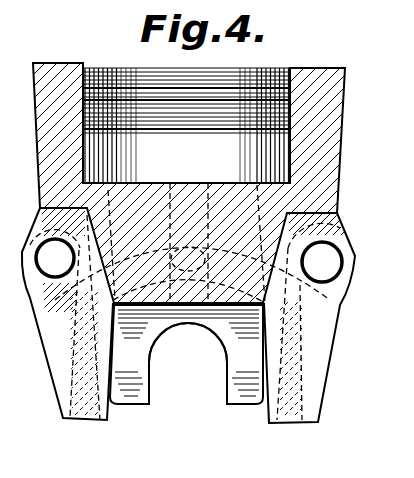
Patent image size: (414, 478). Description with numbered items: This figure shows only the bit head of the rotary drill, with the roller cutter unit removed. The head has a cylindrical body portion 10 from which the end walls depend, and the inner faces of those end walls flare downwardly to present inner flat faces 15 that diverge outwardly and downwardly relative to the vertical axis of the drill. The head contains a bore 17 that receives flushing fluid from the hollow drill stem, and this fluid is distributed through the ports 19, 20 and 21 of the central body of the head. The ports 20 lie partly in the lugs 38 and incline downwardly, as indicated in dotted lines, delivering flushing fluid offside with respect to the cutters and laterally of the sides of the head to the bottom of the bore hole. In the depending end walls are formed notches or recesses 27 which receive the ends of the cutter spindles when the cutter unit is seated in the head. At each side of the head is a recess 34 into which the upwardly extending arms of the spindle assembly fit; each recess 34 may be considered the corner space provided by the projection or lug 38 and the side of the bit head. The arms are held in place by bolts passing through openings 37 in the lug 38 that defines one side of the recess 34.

The cylindrical body portion 10 is at (57, 140).
The inner flat faces 15 is at (135, 372).
The bore 17 is at (304, 100).
The port 19 is at (168, 200).
The ports 20 is at (112, 183).
The port 21 is at (193, 197).
The notches or recesses 27 is at (170, 332).
The recesses 34 is at (113, 297).
The openings 37 is at (45, 257).
The lug 38 is at (53, 355).